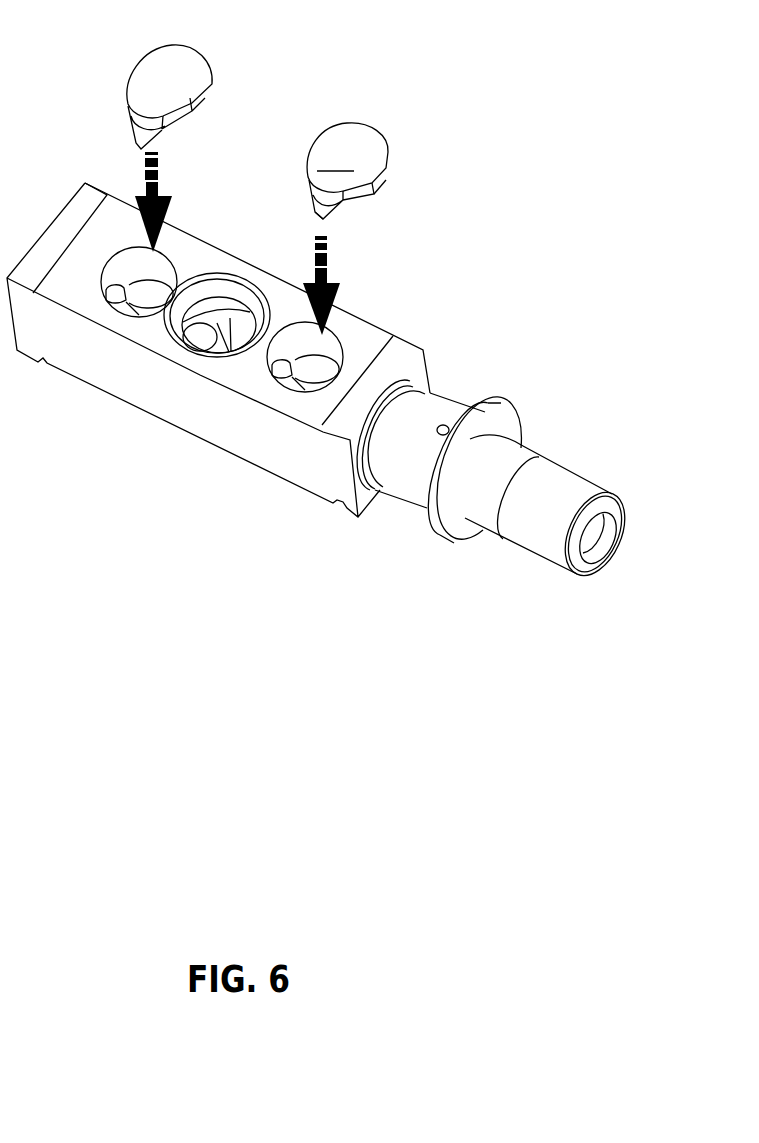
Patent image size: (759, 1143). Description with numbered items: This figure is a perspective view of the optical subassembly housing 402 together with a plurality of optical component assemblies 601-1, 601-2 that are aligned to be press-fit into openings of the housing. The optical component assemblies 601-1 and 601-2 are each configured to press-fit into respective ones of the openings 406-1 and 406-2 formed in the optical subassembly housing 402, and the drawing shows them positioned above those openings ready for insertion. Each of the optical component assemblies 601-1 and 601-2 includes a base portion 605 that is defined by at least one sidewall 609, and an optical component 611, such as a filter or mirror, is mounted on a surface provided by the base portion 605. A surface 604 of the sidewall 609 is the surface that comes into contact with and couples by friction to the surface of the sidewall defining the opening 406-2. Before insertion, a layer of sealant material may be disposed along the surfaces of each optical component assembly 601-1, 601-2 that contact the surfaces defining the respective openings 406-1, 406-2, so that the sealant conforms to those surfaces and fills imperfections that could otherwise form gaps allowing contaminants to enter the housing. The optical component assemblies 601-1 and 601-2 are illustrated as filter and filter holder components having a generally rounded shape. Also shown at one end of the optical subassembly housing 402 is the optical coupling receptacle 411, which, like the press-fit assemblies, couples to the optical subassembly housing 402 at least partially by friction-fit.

The optical subassembly housing 402 is at (218, 258).
The optical coupling receptacle 411 is at (498, 404).
The opening 406-1 is at (108, 306).
The opening 406-2 is at (278, 378).
The optical component assembly 601-1 is at (178, 53).
The optical component assembly 601-2 is at (372, 166).
The surface of the sidewall 604 is at (368, 188).
The base portion 605 is at (336, 161).
The sidewall 609 is at (381, 167).
The optical component 611 is at (335, 222).